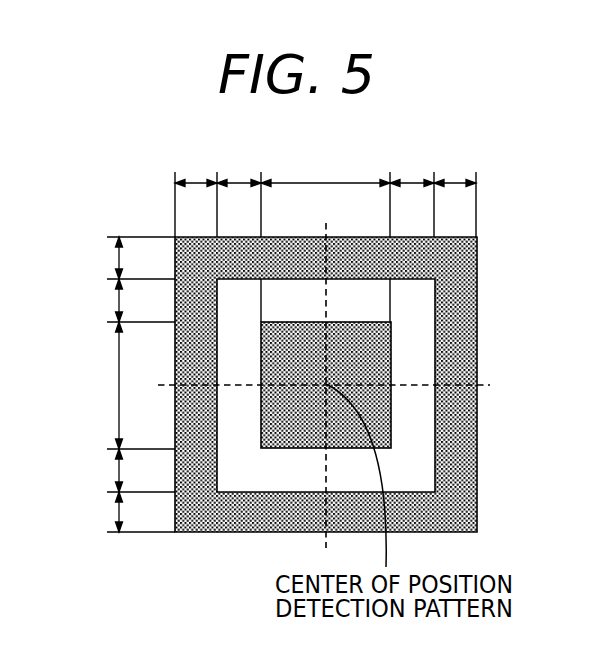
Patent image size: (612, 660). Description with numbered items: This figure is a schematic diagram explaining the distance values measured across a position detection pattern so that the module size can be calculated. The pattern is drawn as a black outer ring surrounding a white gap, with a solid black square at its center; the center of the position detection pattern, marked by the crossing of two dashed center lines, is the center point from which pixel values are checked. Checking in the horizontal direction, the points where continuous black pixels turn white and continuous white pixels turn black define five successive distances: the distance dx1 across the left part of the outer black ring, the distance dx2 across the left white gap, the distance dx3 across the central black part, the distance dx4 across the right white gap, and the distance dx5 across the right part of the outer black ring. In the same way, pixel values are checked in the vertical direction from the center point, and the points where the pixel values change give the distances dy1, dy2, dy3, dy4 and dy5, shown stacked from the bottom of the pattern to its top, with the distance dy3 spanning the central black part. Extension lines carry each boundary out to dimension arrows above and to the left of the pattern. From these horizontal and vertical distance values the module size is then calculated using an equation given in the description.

The distance dx1 is at (196, 171).
The distance dx2 is at (239, 171).
The distance dx3 is at (325, 171).
The distance dx4 is at (412, 171).
The distance dx5 is at (455, 171).
The distance dy1 is at (97, 512).
The distance dy2 is at (97, 470).
The distance dy3 is at (97, 385).
The distance dy4 is at (97, 300).
The distance dy5 is at (97, 258).